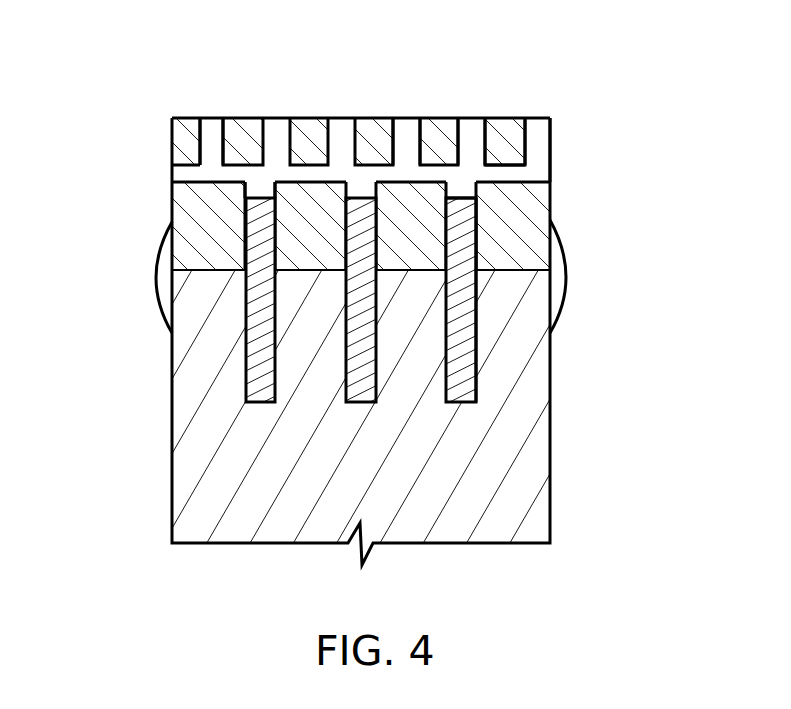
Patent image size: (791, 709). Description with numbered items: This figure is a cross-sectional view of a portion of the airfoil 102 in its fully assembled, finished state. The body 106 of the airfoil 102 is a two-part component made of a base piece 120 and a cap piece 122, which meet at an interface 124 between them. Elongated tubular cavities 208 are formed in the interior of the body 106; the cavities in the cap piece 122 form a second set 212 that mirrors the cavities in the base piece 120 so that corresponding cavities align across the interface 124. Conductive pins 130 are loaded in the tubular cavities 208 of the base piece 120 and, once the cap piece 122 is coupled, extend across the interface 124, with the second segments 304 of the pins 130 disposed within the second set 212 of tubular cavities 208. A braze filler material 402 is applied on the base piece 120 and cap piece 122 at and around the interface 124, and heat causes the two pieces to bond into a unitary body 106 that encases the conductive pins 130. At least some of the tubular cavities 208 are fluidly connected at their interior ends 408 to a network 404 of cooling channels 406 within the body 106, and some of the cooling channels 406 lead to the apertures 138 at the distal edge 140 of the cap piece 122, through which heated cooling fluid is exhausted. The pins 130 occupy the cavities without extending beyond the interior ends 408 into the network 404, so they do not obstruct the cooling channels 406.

The airfoil 102 is at (140, 87).
The body 106 is at (172, 423).
The base piece 120 is at (183, 480).
The cap piece 122 is at (182, 221).
The interface 124 is at (522, 272).
The conductive pins 130 is at (253, 347).
The apertures 138 is at (212, 132).
The distal edge 140 is at (312, 124).
The tubular cavities 208 is at (478, 215).
The second set of tubular cavities 212 is at (237, 195).
The second segment 304 is at (480, 228).
The braze filler material 402 is at (157, 273).
The network of cooling channels 404 is at (531, 140).
The cooling channels 406 is at (406, 140).
The interior ends 408 is at (283, 192).